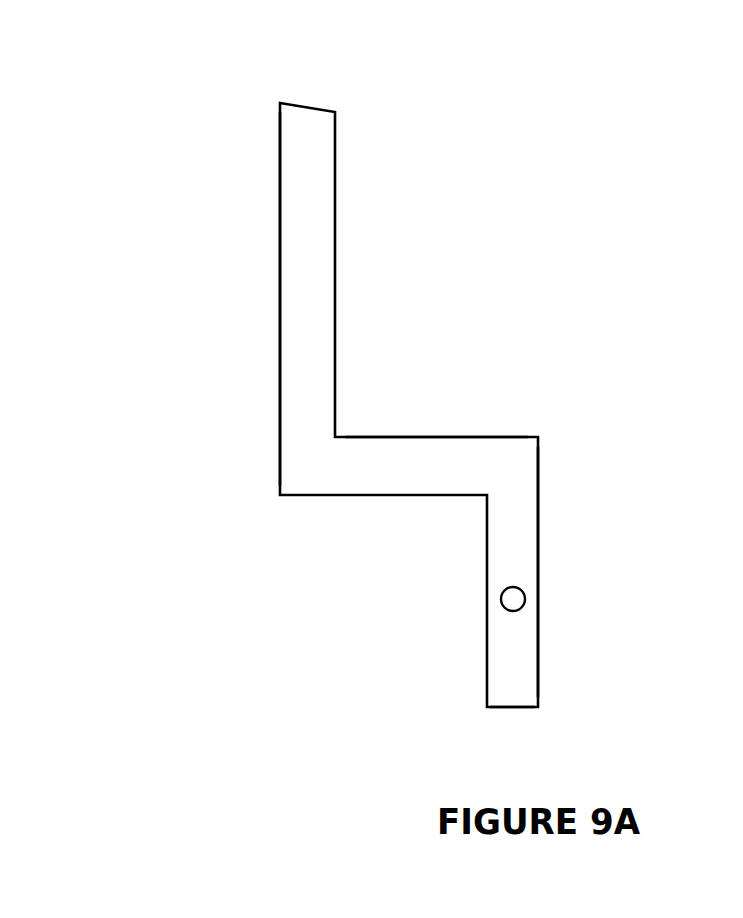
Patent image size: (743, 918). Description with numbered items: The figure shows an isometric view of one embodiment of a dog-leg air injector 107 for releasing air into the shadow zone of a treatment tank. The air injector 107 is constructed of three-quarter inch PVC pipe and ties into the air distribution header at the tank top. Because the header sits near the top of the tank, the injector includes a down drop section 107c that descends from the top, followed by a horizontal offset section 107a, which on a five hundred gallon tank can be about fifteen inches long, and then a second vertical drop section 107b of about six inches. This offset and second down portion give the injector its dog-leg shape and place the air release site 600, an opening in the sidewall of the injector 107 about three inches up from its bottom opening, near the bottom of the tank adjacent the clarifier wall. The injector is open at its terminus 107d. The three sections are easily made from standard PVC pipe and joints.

The air injector 107 is at (477, 195).
The offset section 107a is at (495, 437).
The second vertical drop section 107b is at (538, 524).
The down drop section 107c is at (280, 325).
The terminus 107d is at (520, 707).
The air release site 600 is at (505, 609).